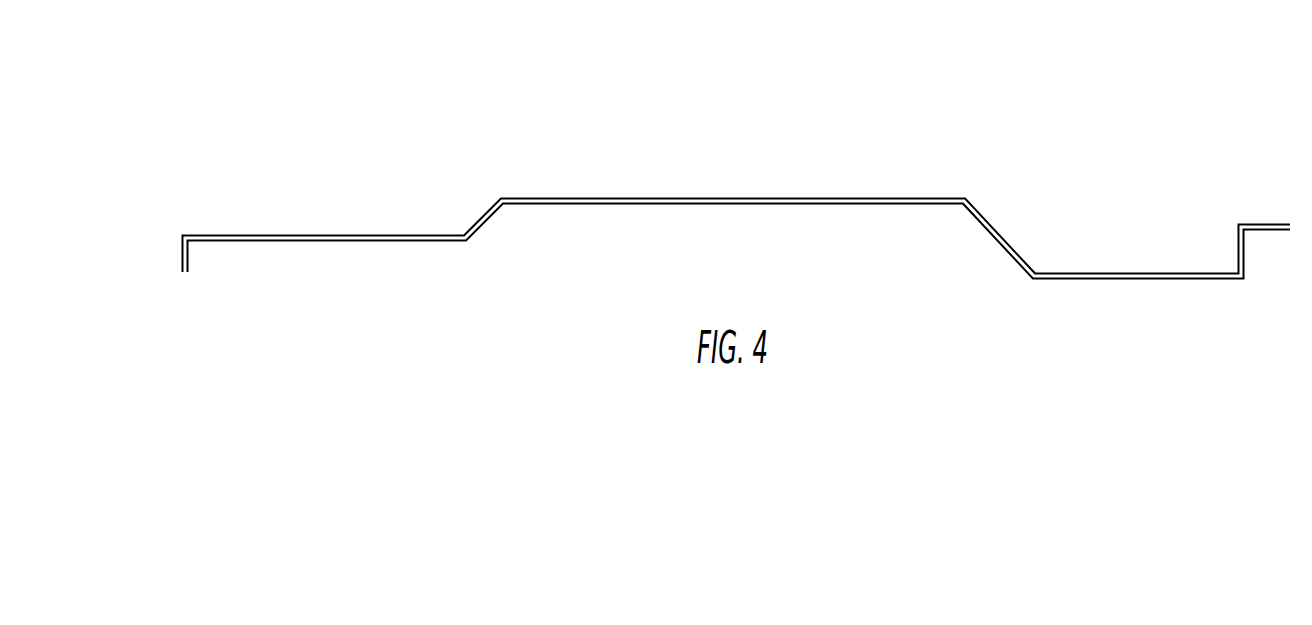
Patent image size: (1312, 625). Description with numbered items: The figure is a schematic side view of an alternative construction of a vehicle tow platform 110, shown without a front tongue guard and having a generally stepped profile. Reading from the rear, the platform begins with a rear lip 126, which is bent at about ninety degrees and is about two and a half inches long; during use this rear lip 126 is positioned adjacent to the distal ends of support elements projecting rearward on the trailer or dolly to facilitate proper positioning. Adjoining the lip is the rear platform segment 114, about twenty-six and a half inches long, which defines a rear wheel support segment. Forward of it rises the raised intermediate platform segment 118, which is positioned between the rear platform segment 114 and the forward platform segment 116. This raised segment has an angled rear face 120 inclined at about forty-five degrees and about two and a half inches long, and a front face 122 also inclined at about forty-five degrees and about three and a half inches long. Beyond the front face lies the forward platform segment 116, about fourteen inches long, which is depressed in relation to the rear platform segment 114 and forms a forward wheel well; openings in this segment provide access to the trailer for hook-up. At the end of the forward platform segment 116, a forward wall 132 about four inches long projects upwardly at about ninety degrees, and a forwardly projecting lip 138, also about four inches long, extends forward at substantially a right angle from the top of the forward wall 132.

The vehicle tow platform 110 is at (950, 104).
The rear platform segment 114 is at (268, 235).
The forward platform segment 116 is at (1141, 273).
The raised intermediate platform segment 118 is at (749, 198).
The angled rear face 120 is at (478, 220).
The front face 122 is at (1015, 249).
The rear lip 126 is at (182, 246).
The forward wall 132 is at (1245, 258).
The forwardly projecting lip 138 is at (1265, 223).